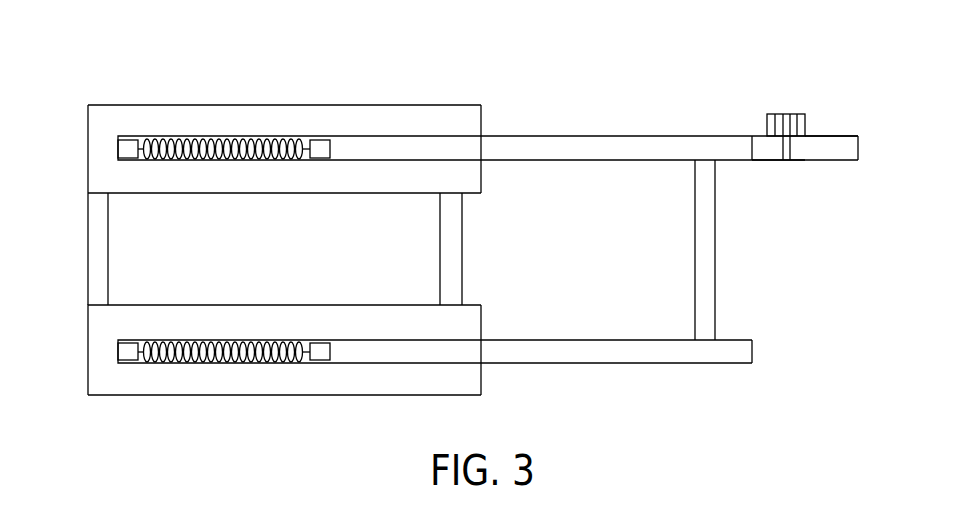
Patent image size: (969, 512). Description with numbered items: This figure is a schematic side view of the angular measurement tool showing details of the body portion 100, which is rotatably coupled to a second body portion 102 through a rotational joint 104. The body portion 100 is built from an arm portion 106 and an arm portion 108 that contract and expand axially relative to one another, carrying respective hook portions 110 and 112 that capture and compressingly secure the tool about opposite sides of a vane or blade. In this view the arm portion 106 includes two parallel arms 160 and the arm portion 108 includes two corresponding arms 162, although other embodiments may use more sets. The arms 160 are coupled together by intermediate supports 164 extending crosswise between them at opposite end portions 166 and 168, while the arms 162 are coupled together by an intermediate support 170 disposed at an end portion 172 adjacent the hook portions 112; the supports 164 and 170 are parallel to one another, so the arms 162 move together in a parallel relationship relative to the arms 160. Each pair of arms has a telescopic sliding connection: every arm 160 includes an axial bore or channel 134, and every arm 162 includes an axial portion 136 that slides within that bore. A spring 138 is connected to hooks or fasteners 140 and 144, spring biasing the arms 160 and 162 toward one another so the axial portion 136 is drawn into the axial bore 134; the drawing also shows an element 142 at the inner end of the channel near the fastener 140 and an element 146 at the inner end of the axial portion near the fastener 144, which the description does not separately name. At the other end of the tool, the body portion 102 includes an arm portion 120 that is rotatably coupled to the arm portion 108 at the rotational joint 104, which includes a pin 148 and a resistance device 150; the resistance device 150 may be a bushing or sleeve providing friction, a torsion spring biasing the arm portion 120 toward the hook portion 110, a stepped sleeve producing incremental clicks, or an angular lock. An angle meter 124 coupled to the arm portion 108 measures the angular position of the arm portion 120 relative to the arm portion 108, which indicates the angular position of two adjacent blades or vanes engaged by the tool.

The body portion 100 is at (335, 432).
The body portion 102 is at (760, 127).
The rotational joint 104 is at (776, 165).
The arm portion 106 is at (167, 440).
The arm portion 108 is at (544, 391).
The hook portion 110 is at (70, 139).
The hook portion 112 is at (717, 128).
The arm portion 120 is at (806, 126).
The angle meter 124 is at (853, 120).
The axial bore or channel 134 is at (208, 137).
The axial portion 136 is at (437, 135).
The spring 138 is at (183, 137).
The hook or fastener 140 is at (137, 138).
The stop 142 is at (120, 138).
The hook or fastener 144 is at (305, 137).
The piston head 146 is at (325, 138).
The pin 148 is at (785, 161).
The resistance device 150 is at (802, 115).
The arms 160 is at (285, 195).
The arms 162 is at (614, 162).
The intermediate supports 164 is at (110, 248).
The end portion 166 is at (88, 172).
The end portion 168 is at (483, 180).
The intermediate support 170 is at (694, 262).
The end portion 172 is at (752, 352).